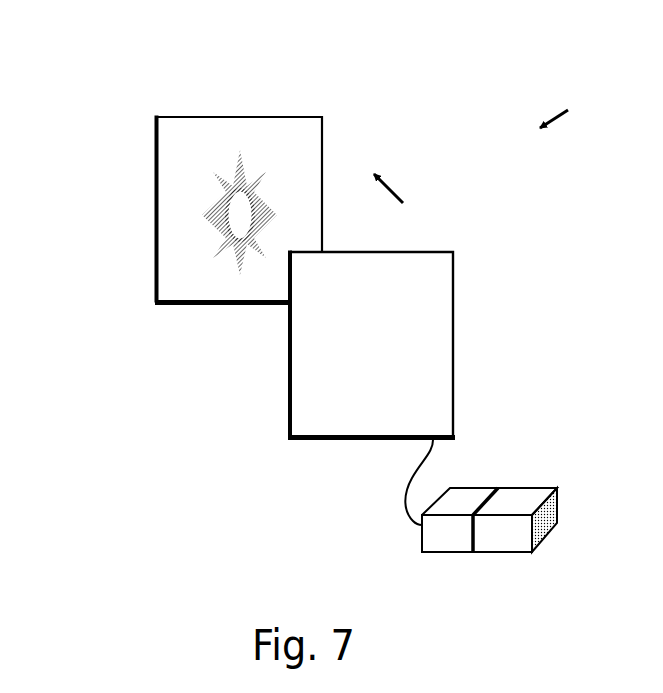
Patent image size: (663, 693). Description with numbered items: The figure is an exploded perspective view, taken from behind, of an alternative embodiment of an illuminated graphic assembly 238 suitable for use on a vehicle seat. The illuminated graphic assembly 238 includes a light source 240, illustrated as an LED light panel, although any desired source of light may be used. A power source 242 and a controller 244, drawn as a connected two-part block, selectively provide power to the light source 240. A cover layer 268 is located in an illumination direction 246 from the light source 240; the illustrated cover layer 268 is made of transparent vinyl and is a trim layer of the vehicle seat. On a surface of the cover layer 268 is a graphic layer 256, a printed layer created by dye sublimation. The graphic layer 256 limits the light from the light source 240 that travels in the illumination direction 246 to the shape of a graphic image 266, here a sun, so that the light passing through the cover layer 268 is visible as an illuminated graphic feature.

The illuminated graphic assembly 238 is at (575, 105).
The light source 240 is at (455, 404).
The power source 242 is at (523, 543).
The controller 244 is at (468, 543).
The illumination direction 246 is at (388, 186).
The graphic layer 256 is at (183, 262).
The graphic image 266 is at (232, 163).
The cover layer 268 is at (154, 193).